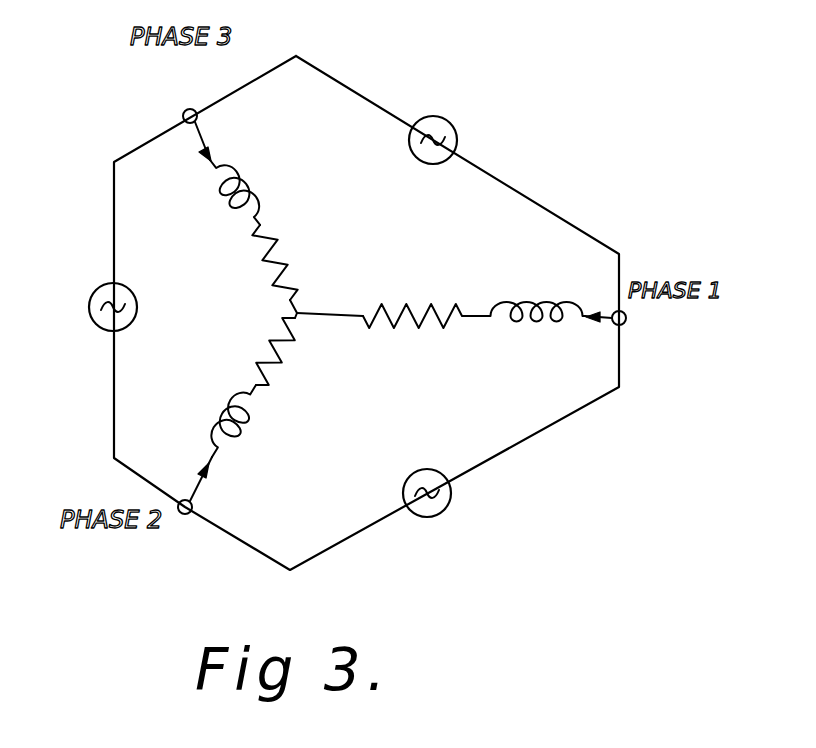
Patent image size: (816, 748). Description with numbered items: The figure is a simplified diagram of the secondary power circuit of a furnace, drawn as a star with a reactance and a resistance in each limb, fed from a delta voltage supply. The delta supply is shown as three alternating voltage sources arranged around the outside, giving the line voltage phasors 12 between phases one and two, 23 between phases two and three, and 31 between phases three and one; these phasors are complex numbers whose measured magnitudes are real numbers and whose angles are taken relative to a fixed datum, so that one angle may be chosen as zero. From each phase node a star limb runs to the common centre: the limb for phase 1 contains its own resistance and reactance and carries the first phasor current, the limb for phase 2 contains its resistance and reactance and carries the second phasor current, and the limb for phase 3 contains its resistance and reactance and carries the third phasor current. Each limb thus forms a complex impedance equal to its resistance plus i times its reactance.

The phase 1 limb 1 is at (602, 334).
The phase 2 limb 2 is at (240, 472).
The phase 3 limb 3 is at (237, 117).
The delta supply voltage V12 12 is at (412, 546).
The delta supply voltage V23 23 is at (50, 290).
The delta supply voltage V31 31 is at (484, 123).